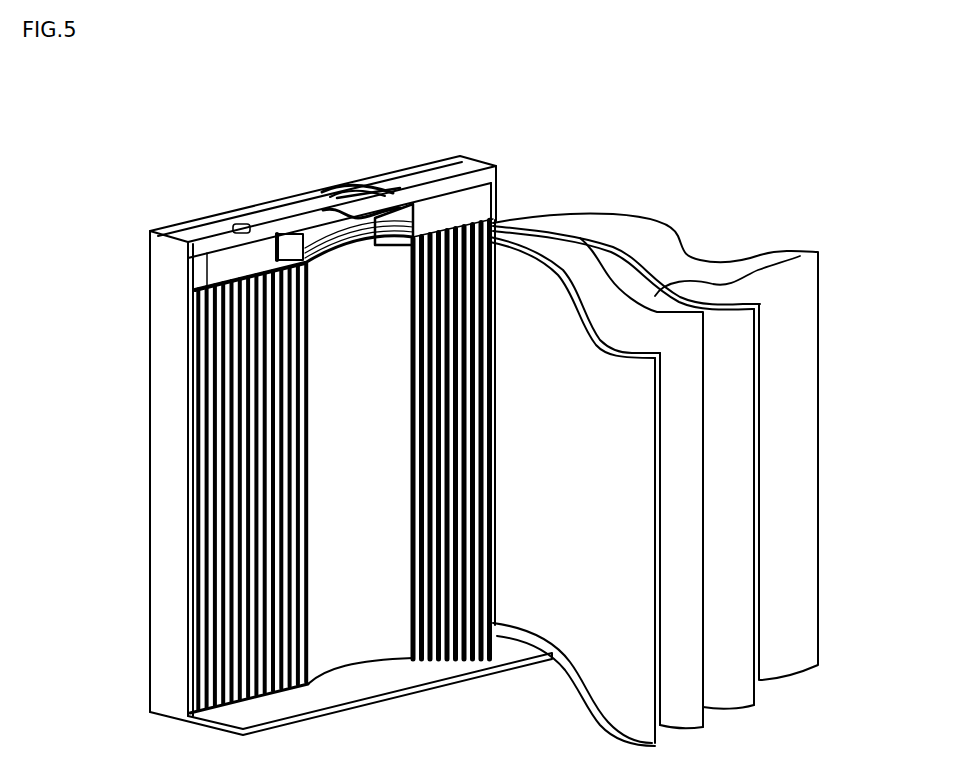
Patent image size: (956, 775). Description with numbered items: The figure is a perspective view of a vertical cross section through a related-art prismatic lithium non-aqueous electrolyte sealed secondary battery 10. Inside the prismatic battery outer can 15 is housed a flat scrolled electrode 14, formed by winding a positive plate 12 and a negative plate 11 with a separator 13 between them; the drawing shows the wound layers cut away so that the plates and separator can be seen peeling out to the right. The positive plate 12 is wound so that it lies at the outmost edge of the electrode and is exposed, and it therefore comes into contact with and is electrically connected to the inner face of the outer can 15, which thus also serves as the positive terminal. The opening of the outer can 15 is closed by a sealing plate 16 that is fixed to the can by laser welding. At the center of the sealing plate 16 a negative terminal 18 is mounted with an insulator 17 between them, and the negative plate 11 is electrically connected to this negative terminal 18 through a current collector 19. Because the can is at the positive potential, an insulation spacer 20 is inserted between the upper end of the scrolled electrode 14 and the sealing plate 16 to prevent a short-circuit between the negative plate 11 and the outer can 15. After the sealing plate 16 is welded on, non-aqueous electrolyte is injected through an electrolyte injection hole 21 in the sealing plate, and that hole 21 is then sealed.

The sealed secondary battery 10 is at (80, 96).
The negative plate 11 is at (798, 253).
The positive plate 12 is at (632, 353).
The separator 13 is at (600, 216).
The flat scrolled electrode 14 is at (197, 477).
The prismatic battery outer can 15 is at (170, 278).
The sealing plate 16 is at (463, 153).
The insulator 17 is at (292, 243).
The negative terminal 18 is at (327, 193).
The current collector 19 is at (287, 233).
The insulation spacer 20 is at (477, 207).
The electrolyte injection hole 21 is at (237, 226).